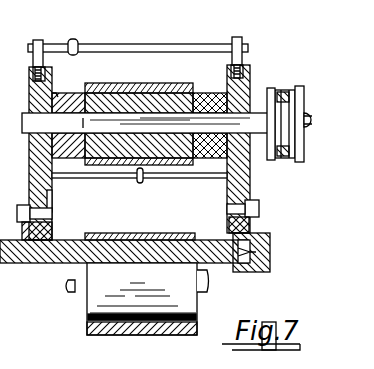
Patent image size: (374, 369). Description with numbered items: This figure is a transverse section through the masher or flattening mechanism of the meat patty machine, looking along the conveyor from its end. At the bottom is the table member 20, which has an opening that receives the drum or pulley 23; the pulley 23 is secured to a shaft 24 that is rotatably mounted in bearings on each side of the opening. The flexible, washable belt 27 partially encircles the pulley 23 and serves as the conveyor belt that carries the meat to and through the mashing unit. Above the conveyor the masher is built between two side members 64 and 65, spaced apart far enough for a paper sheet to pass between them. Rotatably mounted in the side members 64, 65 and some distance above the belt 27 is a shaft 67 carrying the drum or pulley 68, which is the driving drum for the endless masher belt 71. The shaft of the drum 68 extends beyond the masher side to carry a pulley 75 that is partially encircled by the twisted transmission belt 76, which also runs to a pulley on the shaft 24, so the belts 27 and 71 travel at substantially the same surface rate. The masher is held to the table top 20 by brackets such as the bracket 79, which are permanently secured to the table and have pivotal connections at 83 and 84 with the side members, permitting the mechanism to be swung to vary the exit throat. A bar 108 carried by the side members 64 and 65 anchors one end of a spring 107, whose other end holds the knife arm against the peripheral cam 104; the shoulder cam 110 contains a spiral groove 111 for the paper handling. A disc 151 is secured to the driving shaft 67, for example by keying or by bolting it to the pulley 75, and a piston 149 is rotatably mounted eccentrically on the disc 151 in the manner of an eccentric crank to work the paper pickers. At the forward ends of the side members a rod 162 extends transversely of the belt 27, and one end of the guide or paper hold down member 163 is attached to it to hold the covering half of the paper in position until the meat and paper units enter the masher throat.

The table member 20 is at (43, 263).
The drum or pulley 23 is at (92, 306).
The shaft 24 is at (75, 288).
The belt 27 is at (173, 233).
The side member 64 is at (250, 83).
The side member 65 is at (33, 80).
The shaft 67 is at (24, 122).
The drum or pulley 68 is at (82, 93).
The belt 71 is at (160, 85).
The pulley 75 is at (270, 160).
The transmission belt 76 is at (284, 92).
The bracket 79 is at (262, 224).
The pivotal connection 83 is at (260, 207).
The pivotal connection 84 is at (52, 208).
The peripheral cam 104 is at (50, 152).
The spring 107 is at (78, 43).
The bar 108 is at (188, 44).
The shoulder cam 110 is at (22, 232).
The spiral groove 111 is at (58, 94).
The piston 149 is at (313, 121).
The disc 151 is at (298, 164).
The rod 162 is at (168, 185).
The guide or paper hold down member 163 is at (140, 184).